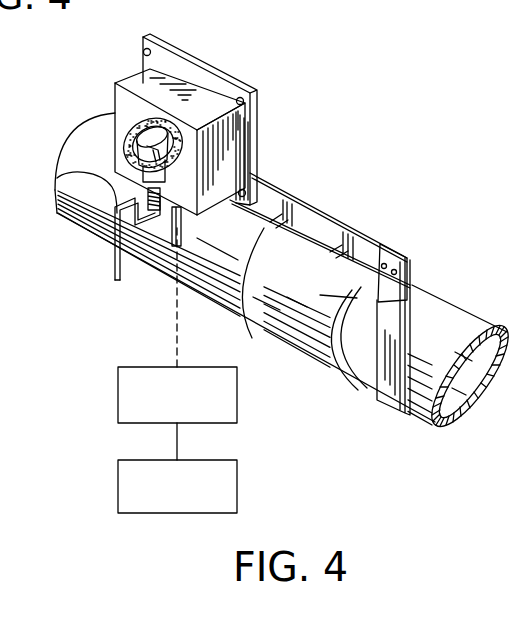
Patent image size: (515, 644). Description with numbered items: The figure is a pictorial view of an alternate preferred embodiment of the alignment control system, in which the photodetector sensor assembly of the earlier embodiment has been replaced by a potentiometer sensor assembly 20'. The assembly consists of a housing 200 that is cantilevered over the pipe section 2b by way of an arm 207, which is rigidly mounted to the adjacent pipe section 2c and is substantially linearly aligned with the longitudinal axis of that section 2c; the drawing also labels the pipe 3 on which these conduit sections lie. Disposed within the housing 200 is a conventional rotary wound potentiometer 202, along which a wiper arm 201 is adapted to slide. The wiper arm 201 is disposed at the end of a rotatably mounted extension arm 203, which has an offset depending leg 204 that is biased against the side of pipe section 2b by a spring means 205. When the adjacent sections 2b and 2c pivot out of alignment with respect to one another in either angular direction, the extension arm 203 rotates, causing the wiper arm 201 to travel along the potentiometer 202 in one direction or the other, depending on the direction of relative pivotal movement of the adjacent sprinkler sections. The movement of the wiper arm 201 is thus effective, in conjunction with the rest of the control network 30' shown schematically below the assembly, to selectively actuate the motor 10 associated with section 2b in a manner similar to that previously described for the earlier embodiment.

The housing 200 is at (172, 83).
The potentiometer sensor assembly 20' is at (257, 119).
The rotary wound potentiometer 202 is at (147, 117).
The wiper arm 201 is at (150, 131).
The extension arm 203 is at (82, 170).
The pipe section 2b is at (97, 212).
The offset depending leg 204 is at (115, 272).
The spring means 205 is at (166, 226).
The tube 3 is at (258, 312).
The arm 207 is at (290, 232).
The control network 30' is at (202, 395).
The motor 10 is at (230, 477).
The pipe section 2c is at (368, 388).